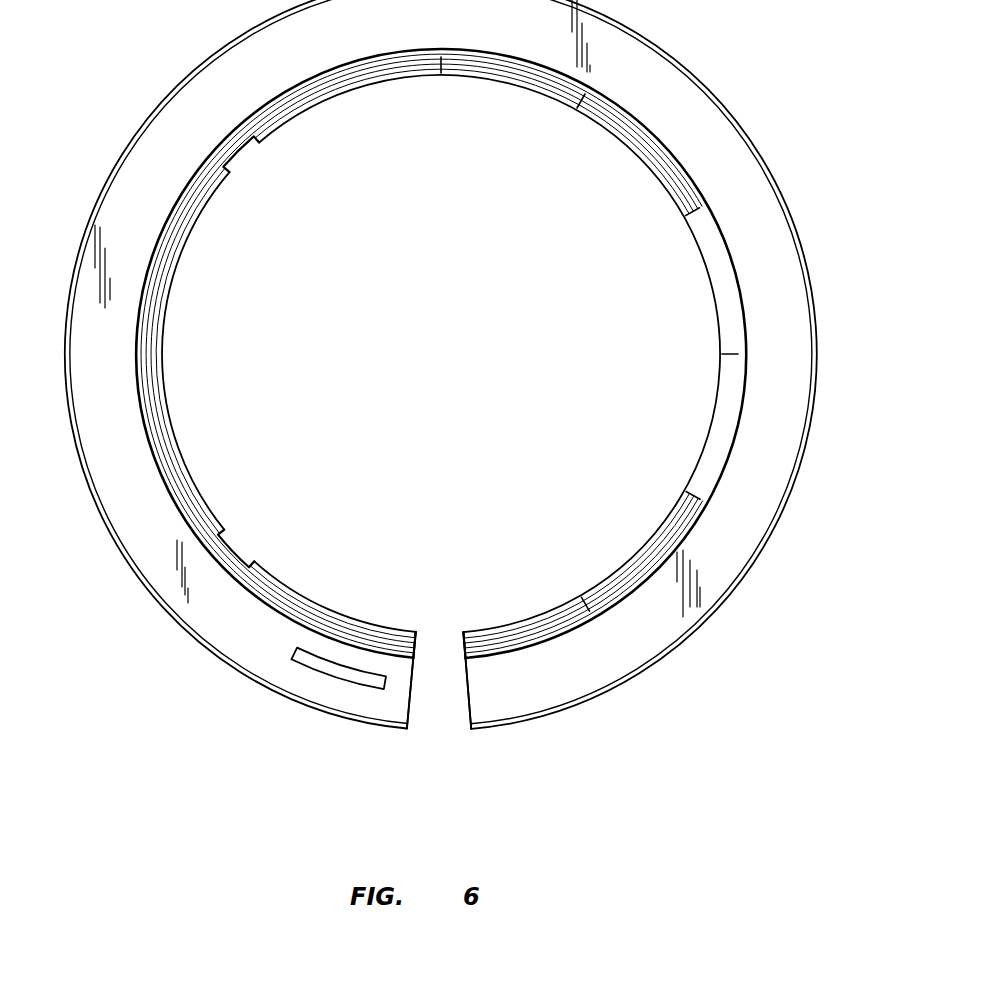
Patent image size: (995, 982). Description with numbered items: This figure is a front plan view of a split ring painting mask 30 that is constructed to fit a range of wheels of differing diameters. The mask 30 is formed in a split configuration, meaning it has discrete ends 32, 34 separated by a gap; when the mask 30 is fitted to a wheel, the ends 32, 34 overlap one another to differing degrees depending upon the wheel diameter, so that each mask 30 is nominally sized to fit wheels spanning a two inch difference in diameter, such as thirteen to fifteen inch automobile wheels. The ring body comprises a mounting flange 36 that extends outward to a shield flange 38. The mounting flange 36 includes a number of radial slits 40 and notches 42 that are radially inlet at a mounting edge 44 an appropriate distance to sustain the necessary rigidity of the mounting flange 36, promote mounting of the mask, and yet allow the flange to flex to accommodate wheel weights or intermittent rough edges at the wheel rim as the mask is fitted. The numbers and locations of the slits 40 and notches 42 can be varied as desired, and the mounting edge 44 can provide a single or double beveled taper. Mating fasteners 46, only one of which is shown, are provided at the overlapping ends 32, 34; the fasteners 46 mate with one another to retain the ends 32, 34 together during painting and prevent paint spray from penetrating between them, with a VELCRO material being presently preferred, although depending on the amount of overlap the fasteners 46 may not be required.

The painting mask 30 is at (735, 28).
The end 32 is at (461, 704).
The end 34 is at (410, 704).
The mounting flange 36 is at (280, 593).
The shield flange 38 is at (147, 555).
The radial slits 40 is at (579, 104).
The notches 42 is at (235, 155).
The mounting edge 44 is at (162, 358).
The mating fasteners 46 is at (337, 673).